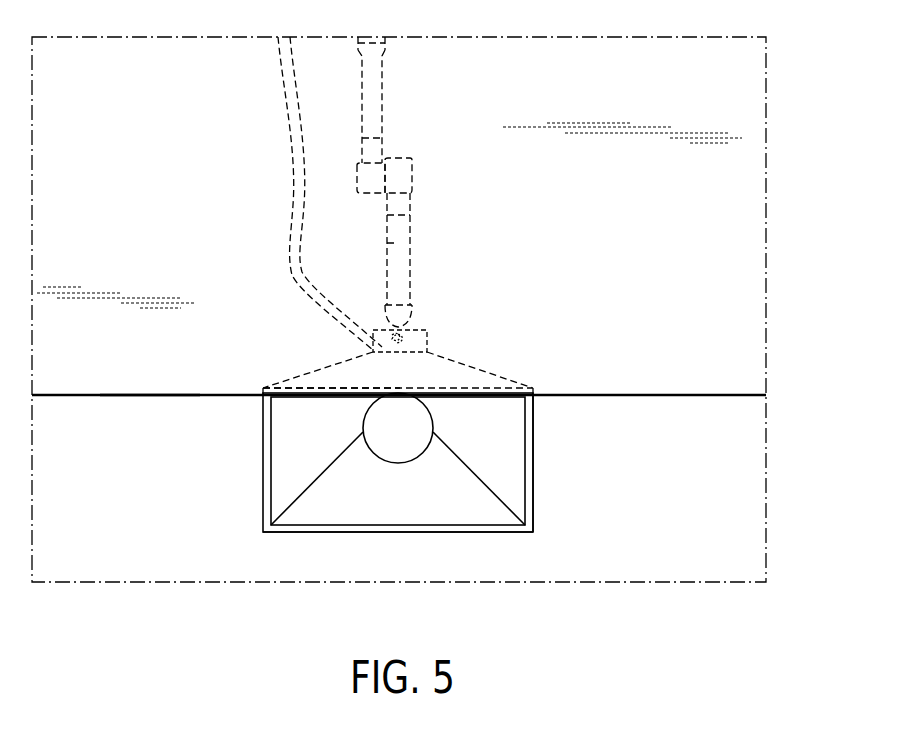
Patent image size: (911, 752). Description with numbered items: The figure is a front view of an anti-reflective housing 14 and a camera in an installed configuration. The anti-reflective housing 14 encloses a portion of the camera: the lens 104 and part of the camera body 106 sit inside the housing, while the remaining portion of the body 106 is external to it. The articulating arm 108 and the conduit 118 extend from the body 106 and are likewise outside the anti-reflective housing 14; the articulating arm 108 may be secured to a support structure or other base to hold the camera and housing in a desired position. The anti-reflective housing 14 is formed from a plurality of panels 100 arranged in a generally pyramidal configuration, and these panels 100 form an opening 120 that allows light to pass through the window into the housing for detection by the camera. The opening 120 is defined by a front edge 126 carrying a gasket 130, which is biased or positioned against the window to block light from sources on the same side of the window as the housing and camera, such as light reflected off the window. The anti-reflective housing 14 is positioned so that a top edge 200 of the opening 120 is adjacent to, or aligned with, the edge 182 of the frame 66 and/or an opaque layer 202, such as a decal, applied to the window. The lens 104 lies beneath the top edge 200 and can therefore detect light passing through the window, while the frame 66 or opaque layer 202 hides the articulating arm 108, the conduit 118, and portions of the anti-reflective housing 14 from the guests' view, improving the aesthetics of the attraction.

The anti-reflective housing 14 is at (258, 535).
The frame 66 is at (457, 407).
The panels 100 is at (437, 352).
The lens 104 is at (417, 440).
The body 106 is at (425, 350).
The articulating arm 108 is at (388, 243).
The conduit 118 is at (290, 262).
The opening 120 is at (293, 473).
The front edge 126 is at (397, 533).
The gasket 130 is at (533, 490).
The edge 182 is at (147, 397).
The top edge 200 is at (334, 391).
The opaque layer 202 is at (685, 375).